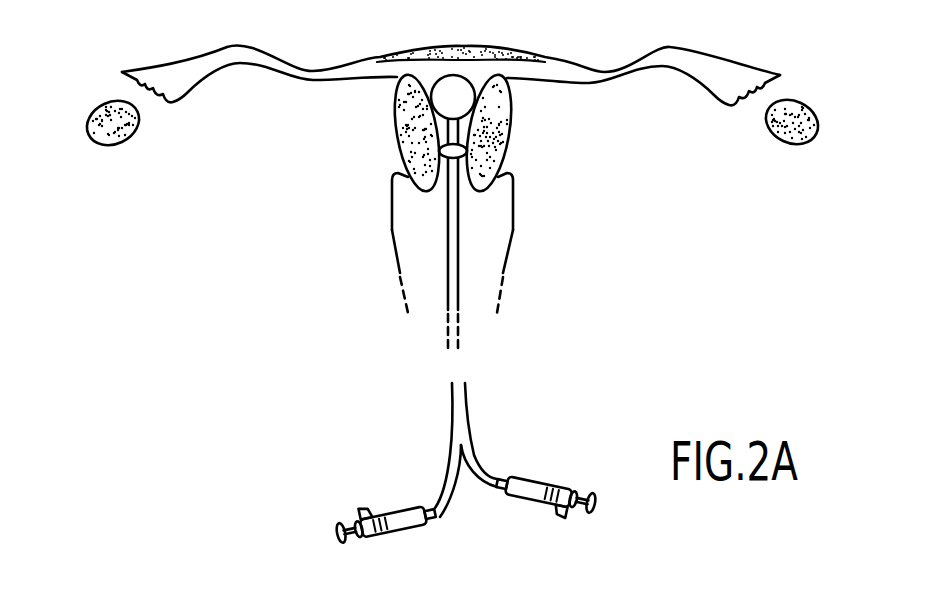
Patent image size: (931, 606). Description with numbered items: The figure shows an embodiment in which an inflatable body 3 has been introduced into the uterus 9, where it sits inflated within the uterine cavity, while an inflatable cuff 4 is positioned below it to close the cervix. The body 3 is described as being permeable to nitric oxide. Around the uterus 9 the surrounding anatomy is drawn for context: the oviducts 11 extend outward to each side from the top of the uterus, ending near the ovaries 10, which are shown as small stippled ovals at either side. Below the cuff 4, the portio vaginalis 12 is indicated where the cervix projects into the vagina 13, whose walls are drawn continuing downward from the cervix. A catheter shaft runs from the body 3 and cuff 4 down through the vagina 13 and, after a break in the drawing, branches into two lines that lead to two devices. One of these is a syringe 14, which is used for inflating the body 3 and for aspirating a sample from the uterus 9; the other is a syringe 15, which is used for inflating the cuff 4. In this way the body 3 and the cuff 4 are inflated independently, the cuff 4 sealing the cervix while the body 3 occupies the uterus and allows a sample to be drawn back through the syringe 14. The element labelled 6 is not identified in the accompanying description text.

The inflatable body 3 is at (445, 88).
The inflatable cuff 4 is at (477, 140).
The uterine wall tissue (left) 6 is at (450, 135).
The uterus 9 is at (475, 68).
The ovaries 10 is at (90, 110).
The oviducts 11 is at (189, 59).
The portio vaginalis 12 is at (408, 190).
The vagina 13 is at (415, 240).
The syringe for inflating the body 14 is at (547, 476).
The syringe for inflating the cuff 15 is at (382, 510).